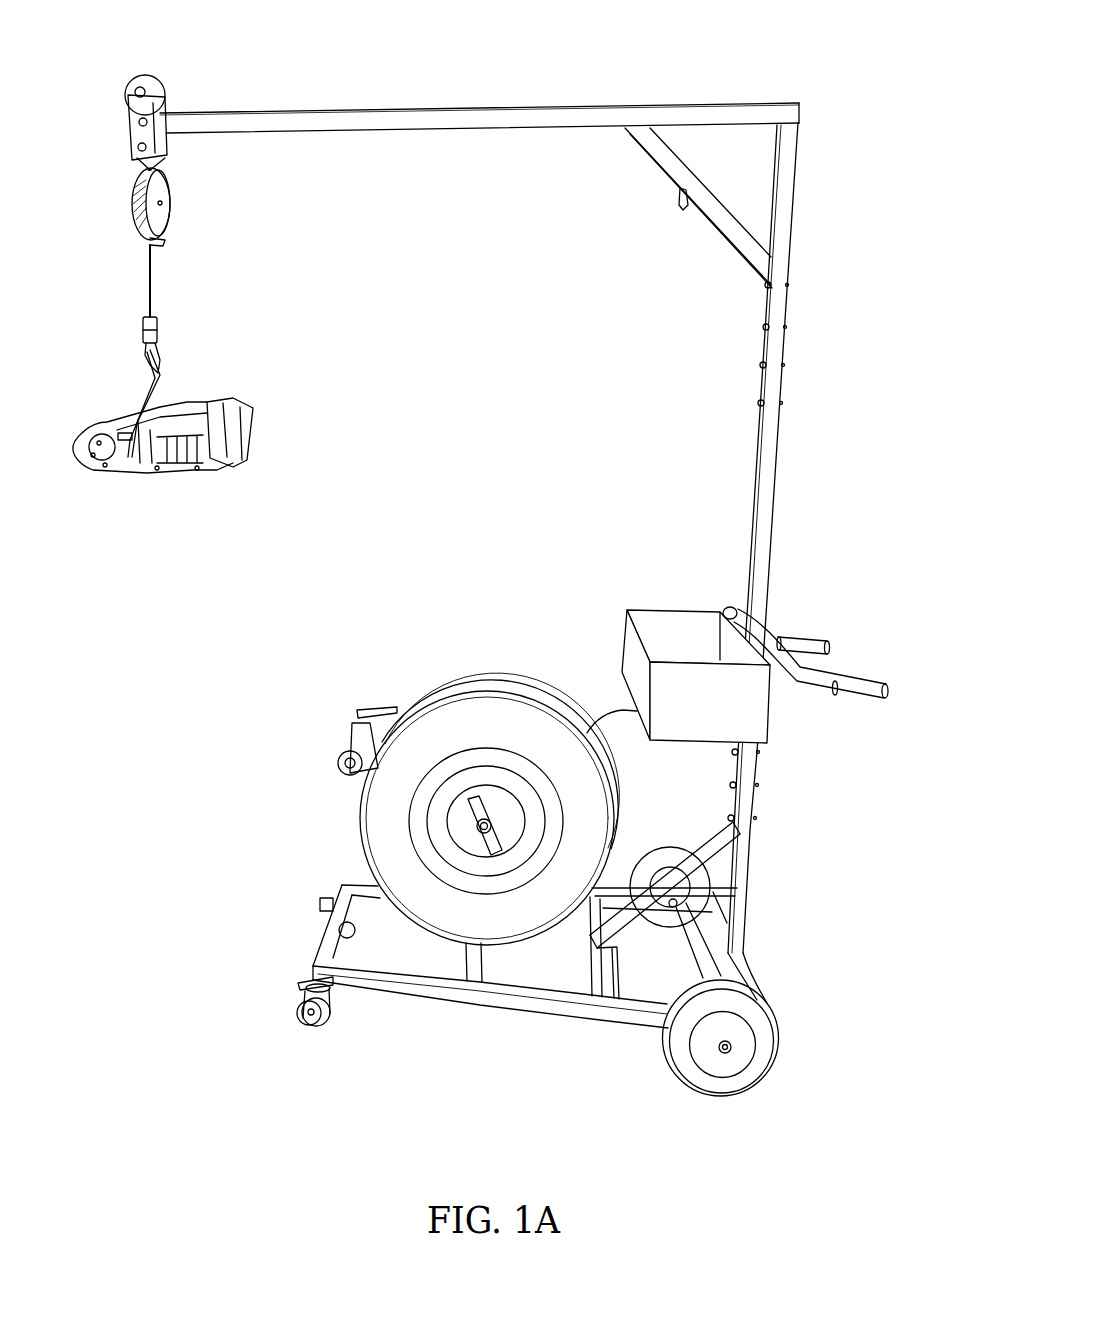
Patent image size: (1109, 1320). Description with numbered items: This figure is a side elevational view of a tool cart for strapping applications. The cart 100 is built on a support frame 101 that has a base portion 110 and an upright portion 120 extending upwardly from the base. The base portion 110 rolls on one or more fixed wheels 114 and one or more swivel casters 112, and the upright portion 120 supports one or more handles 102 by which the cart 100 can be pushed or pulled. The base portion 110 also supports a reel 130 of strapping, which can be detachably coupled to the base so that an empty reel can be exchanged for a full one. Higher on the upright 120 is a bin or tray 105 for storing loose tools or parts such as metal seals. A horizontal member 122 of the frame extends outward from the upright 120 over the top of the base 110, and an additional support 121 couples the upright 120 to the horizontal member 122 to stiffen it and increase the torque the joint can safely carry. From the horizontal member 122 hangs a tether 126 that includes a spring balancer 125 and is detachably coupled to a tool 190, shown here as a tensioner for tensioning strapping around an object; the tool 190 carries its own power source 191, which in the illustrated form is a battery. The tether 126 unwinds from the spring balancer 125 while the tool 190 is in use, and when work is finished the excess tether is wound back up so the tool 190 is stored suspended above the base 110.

The cart 100 is at (805, 42).
The support frame 101 is at (752, 888).
The handle 102 is at (862, 680).
The tray 105 is at (643, 608).
The base portion 110 is at (505, 1009).
The swivel caster 112 is at (315, 1027).
The fixed wheel 114 is at (723, 1100).
The upright portion 120 is at (773, 433).
The additional support 121 is at (652, 161).
The horizontal member 122 is at (482, 104).
The spring balancer 125 is at (172, 217).
The tether 126 is at (153, 285).
The reel 130 is at (356, 806).
The tool 190 is at (163, 474).
The power source 191 is at (256, 420).